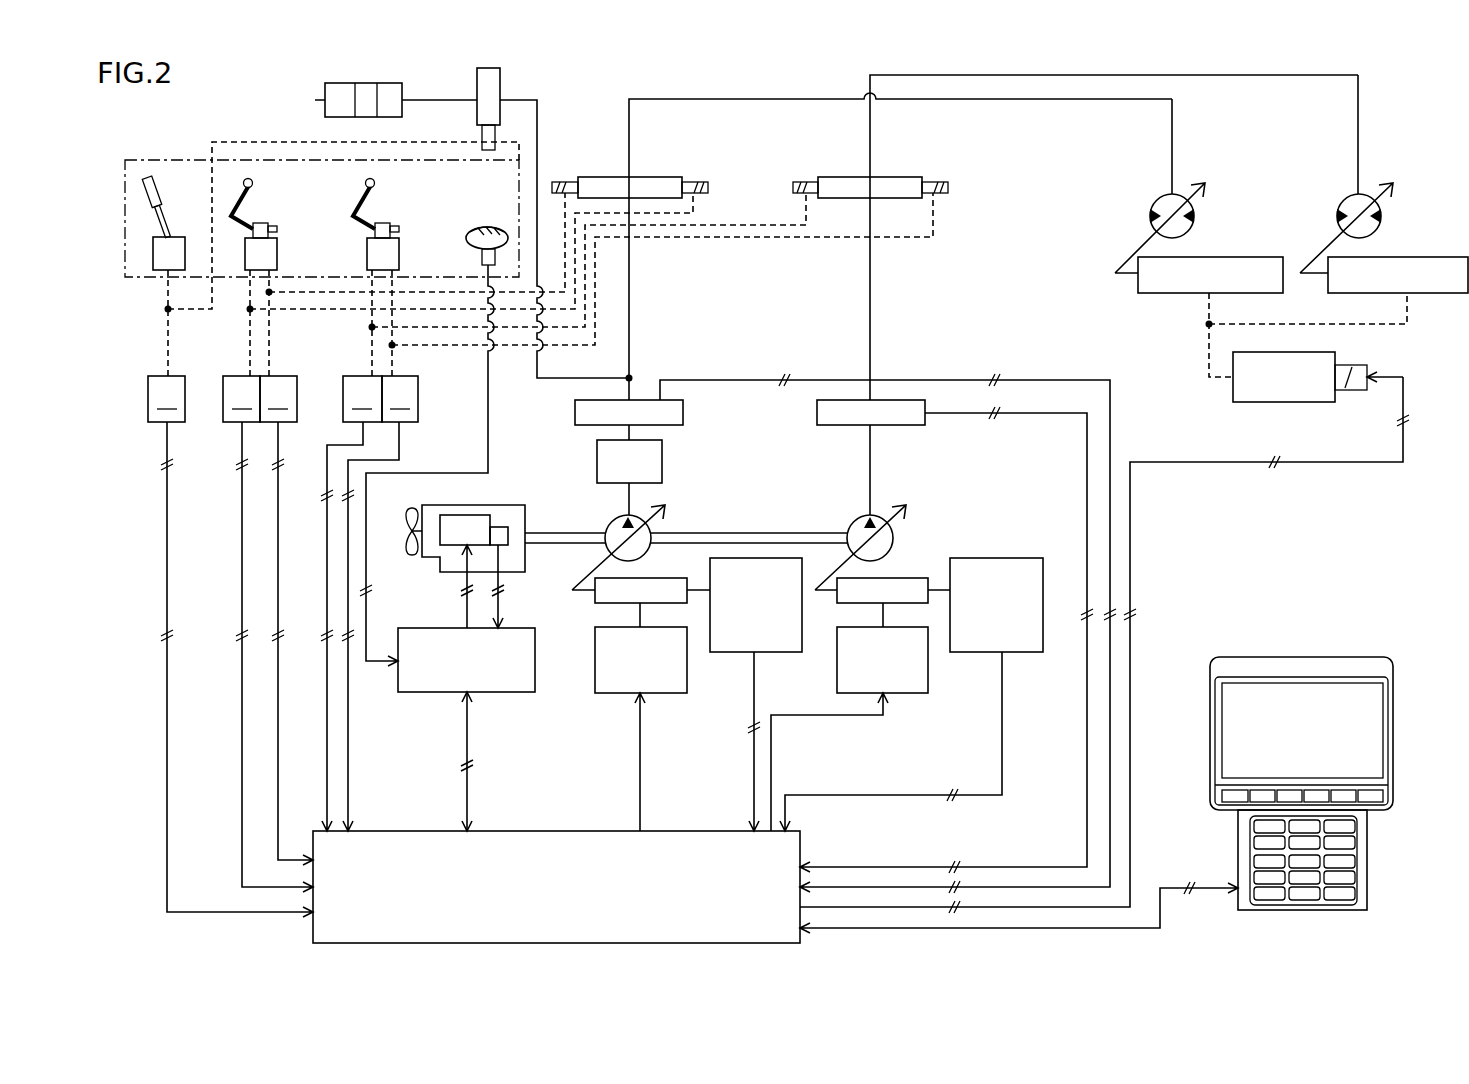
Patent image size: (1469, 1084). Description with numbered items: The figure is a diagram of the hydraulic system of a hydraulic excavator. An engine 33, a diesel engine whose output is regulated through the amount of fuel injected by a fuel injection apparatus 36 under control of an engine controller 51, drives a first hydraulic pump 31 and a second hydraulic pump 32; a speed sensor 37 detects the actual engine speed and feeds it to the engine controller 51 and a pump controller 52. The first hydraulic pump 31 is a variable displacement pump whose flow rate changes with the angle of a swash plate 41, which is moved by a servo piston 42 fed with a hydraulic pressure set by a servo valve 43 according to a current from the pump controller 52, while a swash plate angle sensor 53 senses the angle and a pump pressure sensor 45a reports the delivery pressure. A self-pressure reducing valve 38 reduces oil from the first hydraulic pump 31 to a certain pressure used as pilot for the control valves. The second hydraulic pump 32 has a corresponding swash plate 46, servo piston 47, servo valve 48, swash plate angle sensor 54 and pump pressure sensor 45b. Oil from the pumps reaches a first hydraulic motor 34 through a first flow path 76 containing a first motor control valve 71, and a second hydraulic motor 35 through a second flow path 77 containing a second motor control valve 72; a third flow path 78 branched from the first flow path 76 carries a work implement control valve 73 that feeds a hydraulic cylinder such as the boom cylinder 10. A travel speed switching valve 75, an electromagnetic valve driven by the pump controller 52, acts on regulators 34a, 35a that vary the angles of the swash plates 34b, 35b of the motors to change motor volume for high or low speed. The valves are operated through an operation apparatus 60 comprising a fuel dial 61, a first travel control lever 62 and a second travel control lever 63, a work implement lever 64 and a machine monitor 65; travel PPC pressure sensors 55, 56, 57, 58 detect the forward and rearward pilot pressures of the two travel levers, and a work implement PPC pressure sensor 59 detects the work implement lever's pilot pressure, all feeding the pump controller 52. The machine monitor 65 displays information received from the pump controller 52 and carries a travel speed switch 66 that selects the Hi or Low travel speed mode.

The boom cylinder 10 is at (325, 110).
The work implement control valve 73 is at (500, 78).
The third flow path 78 is at (537, 117).
The first flow path 76 is at (629, 152).
The second flow path 77 is at (870, 127).
The first motor control valve 71 is at (660, 177).
The second motor control valve 72 is at (900, 177).
The operation apparatus 60 is at (147, 160).
The work implement lever 64 is at (172, 220).
The first travel control lever 62 is at (262, 223).
The second travel control lever 63 is at (384, 223).
The fuel dial 61 is at (492, 228).
The first hydraulic motor 34 is at (1153, 200).
The regulator 34a is at (1218, 257).
The swash plate 34b is at (1138, 243).
The second hydraulic motor 35 is at (1340, 200).
The regulator 35a is at (1410, 257).
The swash plate 35b is at (1326, 243).
The travel speed switching valve 75 is at (1283, 402).
The pump pressure sensor 45a is at (668, 425).
The pump pressure sensor 45b is at (905, 425).
The self-pressure reducing valve 38 is at (597, 458).
The first hydraulic pump 31 is at (607, 522).
The swash plate 41 is at (593, 560).
The servo piston 42 is at (653, 578).
The servo valve 43 is at (687, 680).
The swash plate angle sensor 53 is at (790, 652).
The second hydraulic pump 32 is at (849, 522).
The swash plate 46 is at (893, 520).
The servo piston 47 is at (898, 578).
The servo valve 48 is at (928, 680).
The swash plate angle sensor 54 is at (1002, 558).
The engine 33 is at (445, 573).
The fuel injection apparatus 36 is at (467, 515).
The speed sensor 37 is at (508, 533).
The engine controller 51 is at (500, 692).
The pump controller 52 is at (523, 831).
The work implement PPC pressure sensor 59 is at (230, 646).
The travel PPC pressure sensor 55 is at (268, 634).
The travel PPC pressure sensor 56 is at (286, 620).
The travel PPC pressure sensor 57 is at (351, 603).
The travel PPC pressure sensor 58 is at (380, 603).
The machine monitor 65 is at (1254, 657).
The travel speed switch 66 is at (1340, 827).